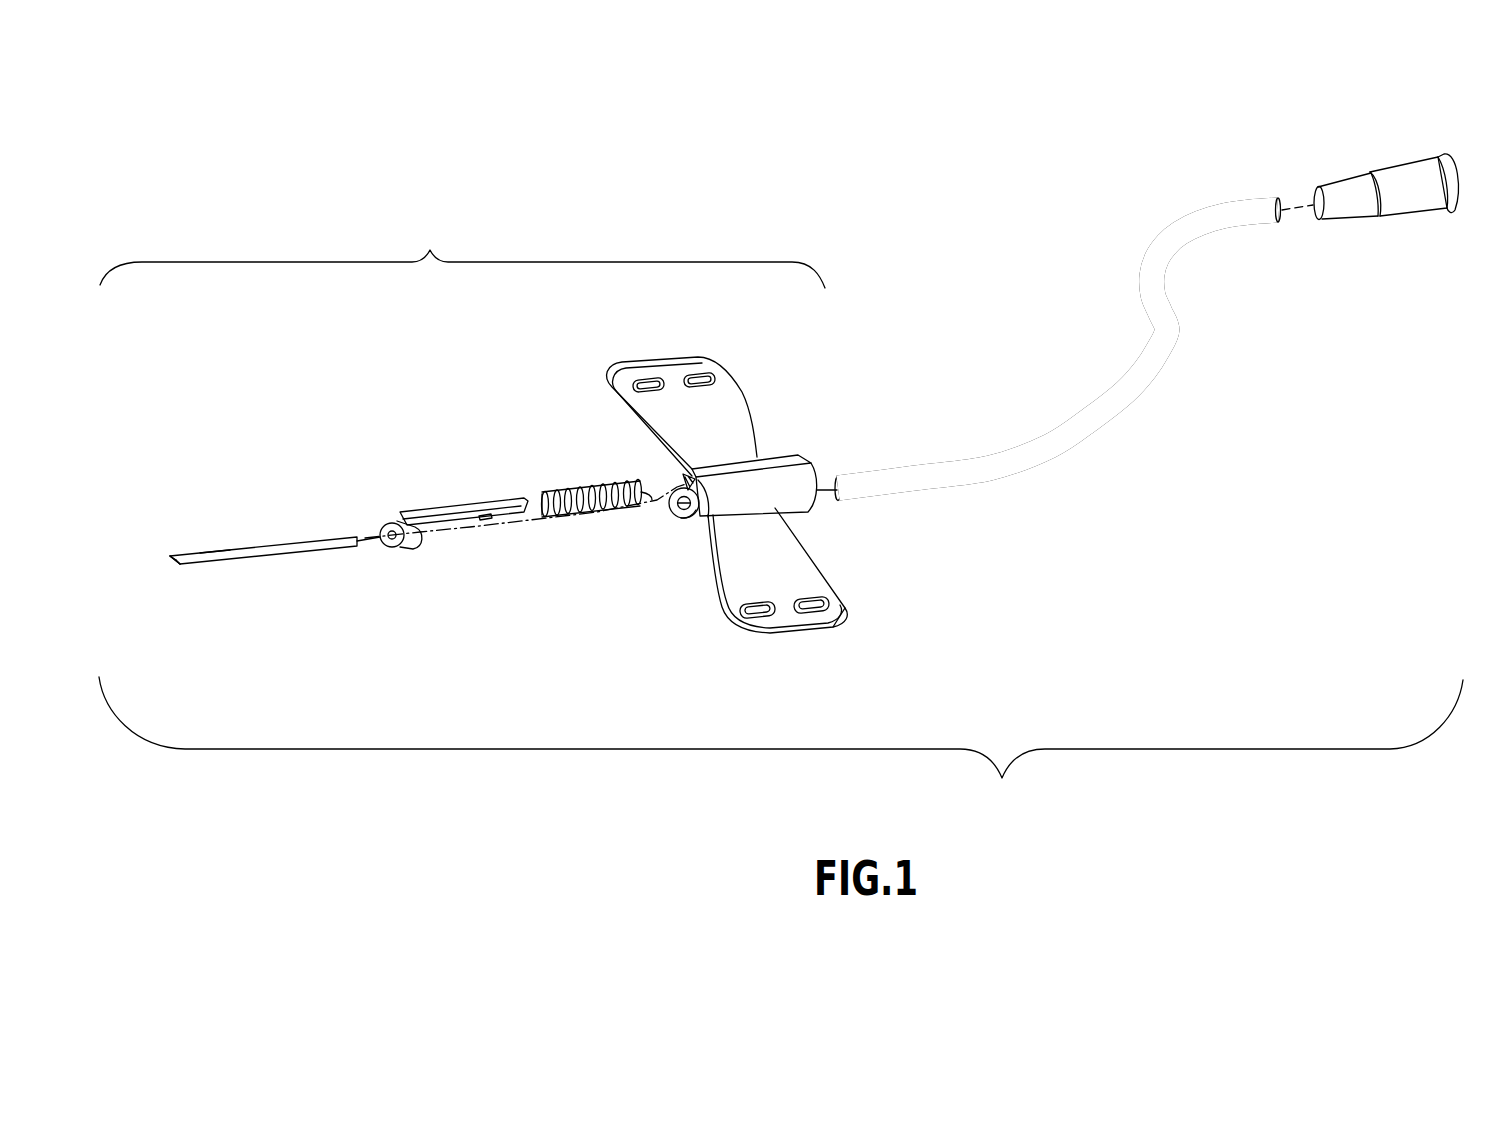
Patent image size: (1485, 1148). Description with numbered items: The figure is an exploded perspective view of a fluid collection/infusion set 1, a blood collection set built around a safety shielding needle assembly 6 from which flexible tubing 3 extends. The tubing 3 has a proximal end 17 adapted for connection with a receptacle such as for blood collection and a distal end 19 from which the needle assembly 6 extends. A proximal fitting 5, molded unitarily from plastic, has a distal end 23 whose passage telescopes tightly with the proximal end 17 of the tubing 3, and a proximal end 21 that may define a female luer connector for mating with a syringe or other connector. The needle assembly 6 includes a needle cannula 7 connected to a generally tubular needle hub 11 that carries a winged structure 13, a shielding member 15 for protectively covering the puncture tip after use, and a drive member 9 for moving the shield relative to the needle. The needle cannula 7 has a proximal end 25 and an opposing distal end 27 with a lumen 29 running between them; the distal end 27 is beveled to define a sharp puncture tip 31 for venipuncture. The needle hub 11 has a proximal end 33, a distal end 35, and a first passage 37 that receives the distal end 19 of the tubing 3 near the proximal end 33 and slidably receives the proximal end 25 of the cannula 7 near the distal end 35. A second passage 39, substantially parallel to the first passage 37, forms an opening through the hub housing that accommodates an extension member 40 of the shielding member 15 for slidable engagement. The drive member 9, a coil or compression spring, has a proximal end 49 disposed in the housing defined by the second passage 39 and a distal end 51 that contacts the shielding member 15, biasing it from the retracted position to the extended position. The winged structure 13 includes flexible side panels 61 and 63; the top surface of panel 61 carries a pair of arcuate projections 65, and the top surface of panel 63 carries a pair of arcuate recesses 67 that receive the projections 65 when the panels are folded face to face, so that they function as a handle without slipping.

The fluid collection/infusion set 1 is at (781, 748).
The flexible tubing 3 is at (993, 450).
The proximal fitting 5 is at (1400, 165).
The needle assembly 6 is at (462, 250).
The needle cannula 7 is at (223, 547).
The drive member 9 is at (600, 513).
The needle hub 11 is at (783, 457).
The winged structure 13 is at (750, 410).
The shielding member 15 is at (413, 512).
The proximal end of tubing 17 is at (1280, 200).
The distal end of tubing 19 is at (830, 477).
The proximal end of fitting 21 is at (1452, 200).
The distal end of fitting 23 is at (1320, 220).
The proximal end of needle cannula 25 is at (360, 543).
The distal end of needle cannula 27 is at (178, 565).
The lumen 29 is at (215, 560).
The puncture tip 31 is at (170, 555).
The proximal end of needle hub 33 is at (817, 507).
The distal end of needle hub 35 is at (690, 523).
The first passage 37 is at (680, 520).
The second passage 39 is at (677, 480).
The extension member 40 is at (465, 503).
The proximal end of drive member 49 is at (655, 508).
The distal end of drive member 51 is at (542, 520).
The side panel 61 is at (680, 355).
The side panel 63 is at (848, 600).
The arcuate projections 65 is at (680, 367).
The arcuate recesses 67 is at (812, 612).